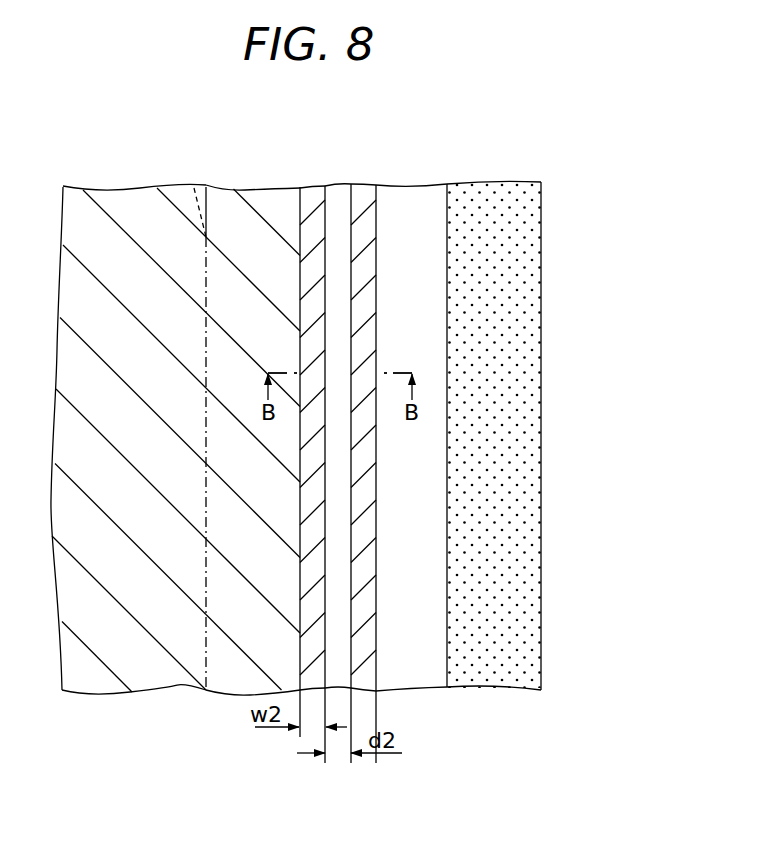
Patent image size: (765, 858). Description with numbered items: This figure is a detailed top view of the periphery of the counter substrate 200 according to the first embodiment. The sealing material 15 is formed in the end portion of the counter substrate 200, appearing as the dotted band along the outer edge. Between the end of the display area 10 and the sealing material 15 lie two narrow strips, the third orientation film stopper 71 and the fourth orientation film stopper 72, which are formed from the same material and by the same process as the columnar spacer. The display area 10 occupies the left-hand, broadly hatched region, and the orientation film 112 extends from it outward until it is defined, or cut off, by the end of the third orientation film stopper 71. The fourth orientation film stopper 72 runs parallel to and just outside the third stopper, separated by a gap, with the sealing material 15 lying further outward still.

The display area 10 is at (203, 186).
The orientation film 112 is at (243, 227).
The third orientation film stopper 71 is at (313, 223).
The fourth orientation film stopper 72 is at (363, 223).
The sealing material 15 is at (515, 305).
The counter substrate 200 is at (541, 455).